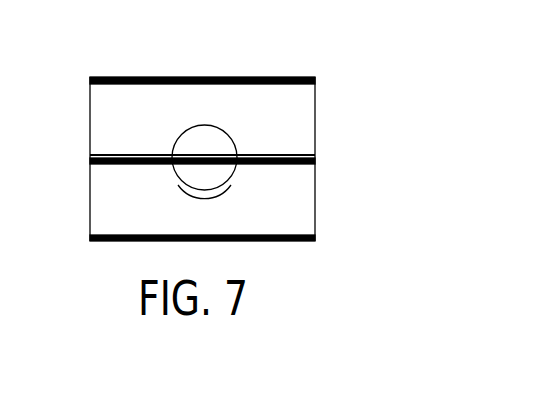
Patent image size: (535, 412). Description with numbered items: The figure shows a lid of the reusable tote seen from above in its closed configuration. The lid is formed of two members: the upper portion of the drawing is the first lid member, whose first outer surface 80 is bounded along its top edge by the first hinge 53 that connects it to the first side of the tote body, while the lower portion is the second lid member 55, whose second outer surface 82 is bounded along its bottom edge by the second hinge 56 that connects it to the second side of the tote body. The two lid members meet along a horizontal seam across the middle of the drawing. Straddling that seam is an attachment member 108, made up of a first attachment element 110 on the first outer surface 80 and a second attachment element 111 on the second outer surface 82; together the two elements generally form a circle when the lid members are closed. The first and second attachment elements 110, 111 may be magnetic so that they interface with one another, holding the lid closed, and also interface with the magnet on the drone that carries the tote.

The first hinge 53 is at (315, 80).
The second lid member 55 is at (314, 207).
The second hinge 56 is at (92, 237).
The first outer surface 80 is at (290, 92).
The second outer surface 82 is at (108, 220).
The attachment member 108 is at (160, 123).
The first attachment element 110 is at (205, 140).
The second attachment element 111 is at (186, 169).